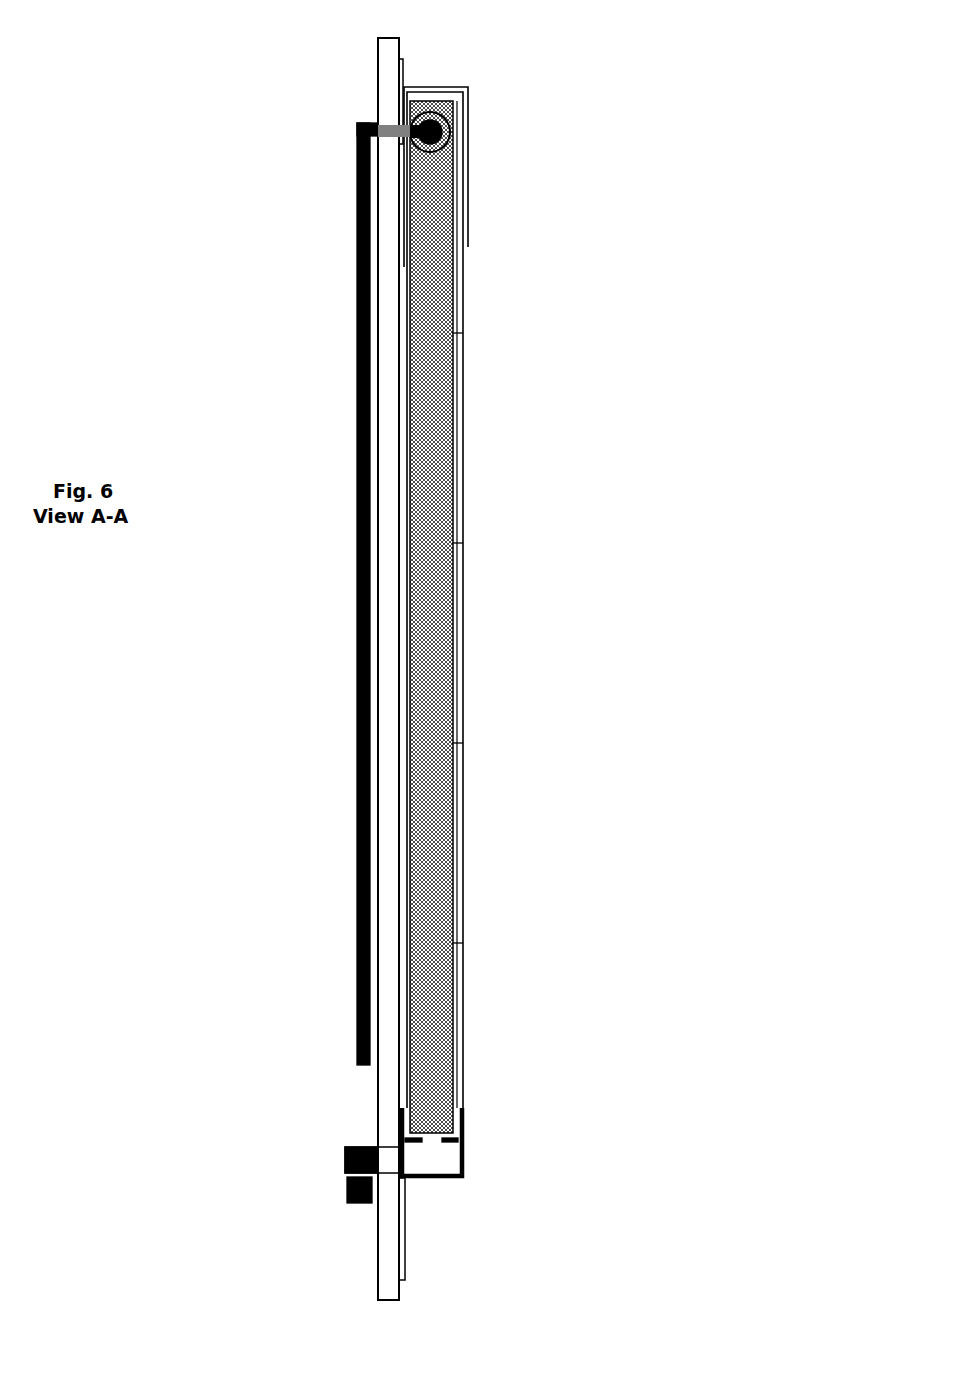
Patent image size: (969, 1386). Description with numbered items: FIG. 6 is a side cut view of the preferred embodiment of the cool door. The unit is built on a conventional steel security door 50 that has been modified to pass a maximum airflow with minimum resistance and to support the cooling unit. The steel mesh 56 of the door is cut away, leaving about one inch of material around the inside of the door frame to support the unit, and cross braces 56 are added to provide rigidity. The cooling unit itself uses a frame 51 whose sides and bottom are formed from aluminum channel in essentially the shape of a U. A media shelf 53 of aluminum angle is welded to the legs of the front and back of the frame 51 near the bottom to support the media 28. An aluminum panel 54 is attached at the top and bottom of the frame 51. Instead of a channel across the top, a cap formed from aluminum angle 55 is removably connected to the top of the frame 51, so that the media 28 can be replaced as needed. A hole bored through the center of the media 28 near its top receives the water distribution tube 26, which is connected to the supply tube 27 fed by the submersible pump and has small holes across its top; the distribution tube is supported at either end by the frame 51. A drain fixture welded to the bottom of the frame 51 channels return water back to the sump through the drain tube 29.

The steel security door 50 is at (378, 80).
The aluminum panel 54 is at (404, 72).
The aluminum angle 55 is at (469, 108).
The water distribution tube 26 is at (445, 136).
The steel mesh 56 is at (463, 333).
The media 28 is at (453, 473).
The supply tube 27 is at (352, 634).
The frame 51 is at (465, 1163).
The media shelf 53 is at (409, 1146).
The drain tube 29 is at (341, 1168).